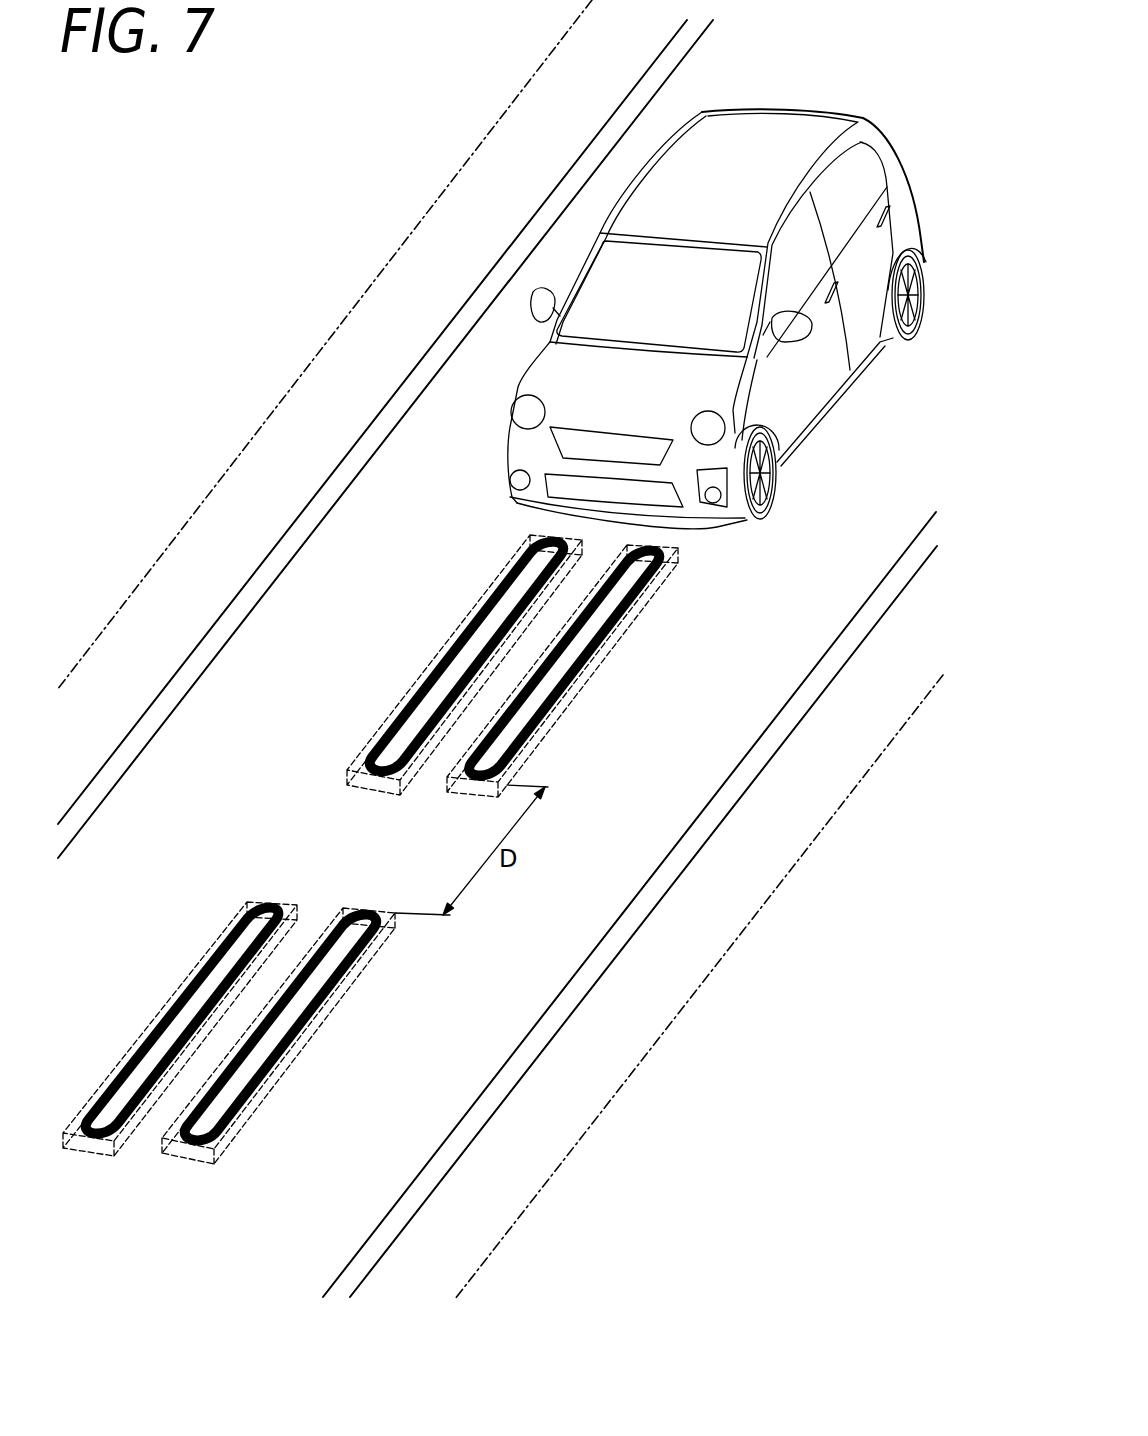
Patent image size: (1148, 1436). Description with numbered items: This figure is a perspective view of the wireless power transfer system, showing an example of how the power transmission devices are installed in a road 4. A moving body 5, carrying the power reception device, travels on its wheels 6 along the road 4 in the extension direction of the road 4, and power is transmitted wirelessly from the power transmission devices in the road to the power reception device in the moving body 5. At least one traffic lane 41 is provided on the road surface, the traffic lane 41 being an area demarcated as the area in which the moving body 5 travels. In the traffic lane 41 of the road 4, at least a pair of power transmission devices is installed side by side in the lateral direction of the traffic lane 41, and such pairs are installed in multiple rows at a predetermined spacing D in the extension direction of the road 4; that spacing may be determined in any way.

The road 4 is at (500, 649).
The traffic lane 41 is at (370, 1043).
The moving body 5 is at (717, 294).
The wheels 6 is at (769, 498).